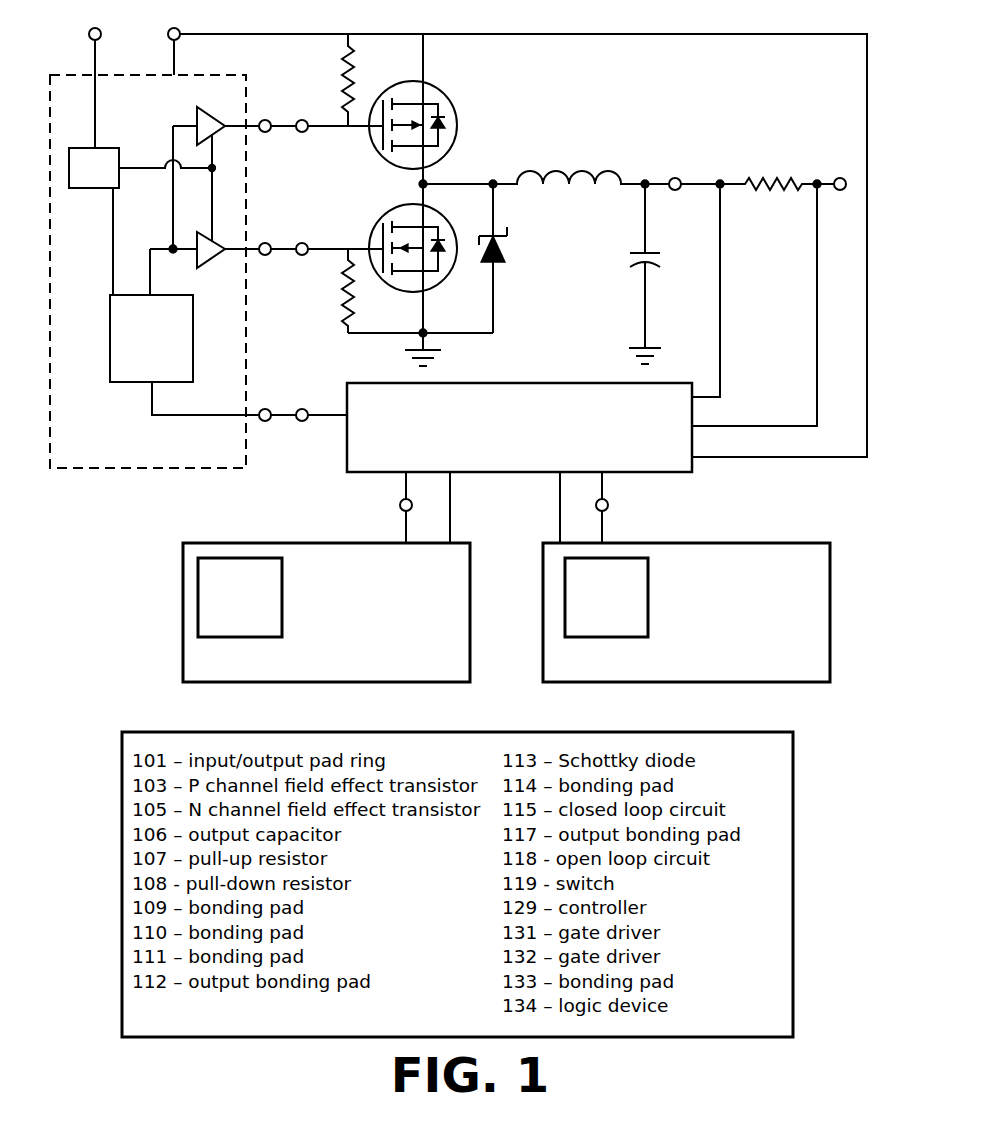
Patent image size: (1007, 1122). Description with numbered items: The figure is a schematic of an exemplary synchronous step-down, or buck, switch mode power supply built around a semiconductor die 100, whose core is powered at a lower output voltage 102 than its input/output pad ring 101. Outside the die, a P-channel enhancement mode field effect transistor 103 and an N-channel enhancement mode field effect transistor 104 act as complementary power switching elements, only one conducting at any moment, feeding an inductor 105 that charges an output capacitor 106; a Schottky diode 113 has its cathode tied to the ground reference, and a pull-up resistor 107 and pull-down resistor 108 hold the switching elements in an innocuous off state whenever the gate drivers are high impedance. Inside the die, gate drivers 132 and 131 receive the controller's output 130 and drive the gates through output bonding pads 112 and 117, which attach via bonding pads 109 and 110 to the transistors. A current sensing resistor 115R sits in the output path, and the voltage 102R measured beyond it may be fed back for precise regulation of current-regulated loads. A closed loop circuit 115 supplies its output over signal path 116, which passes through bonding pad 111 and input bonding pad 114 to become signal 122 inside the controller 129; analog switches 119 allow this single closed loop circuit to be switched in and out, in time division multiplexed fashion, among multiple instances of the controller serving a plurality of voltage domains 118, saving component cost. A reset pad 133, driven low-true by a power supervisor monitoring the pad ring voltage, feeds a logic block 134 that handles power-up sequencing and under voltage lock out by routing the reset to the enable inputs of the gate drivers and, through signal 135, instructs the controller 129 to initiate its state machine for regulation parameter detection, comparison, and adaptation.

The semiconductor die 100 is at (55, 74).
The input/output pad ring 101 is at (181, 27).
The output voltage 102 is at (672, 177).
The voltage at node 115CFB 102R is at (838, 177).
The P-channel enhancement mode field effect transistor 103 is at (441, 96).
The N-channel enhancement mode field effect transistor 104 is at (445, 219).
The inductor 105 is at (565, 168).
The output capacitor 106 is at (662, 262).
The pull-up resistor 107 is at (354, 77).
The pull-down resistor 108 is at (353, 305).
The bonding pad 109 is at (303, 119).
The bonding pad 110 is at (303, 242).
The bonding pad 111 is at (305, 422).
The output bonding pad 112 is at (267, 119).
The Schottky diode 113 is at (506, 248).
The input bonding pad 114 is at (266, 422).
The closed loop circuit 115 is at (582, 363).
The current sensing resistor 115R is at (768, 178).
The signal path 116 is at (330, 413).
The output bonding pad 117 is at (265, 242).
The voltage domain 118 is at (506, 612).
The analog switch 119 is at (400, 505).
The signal 122 is at (191, 412).
The controller 129 is at (379, 466).
The output 130 is at (169, 246).
The gate driver 131 is at (197, 236).
The gate driver 132 is at (196, 113).
The pad 133 is at (100, 27).
The logic block 134 is at (142, 188).
The signal 135 is at (110, 252).